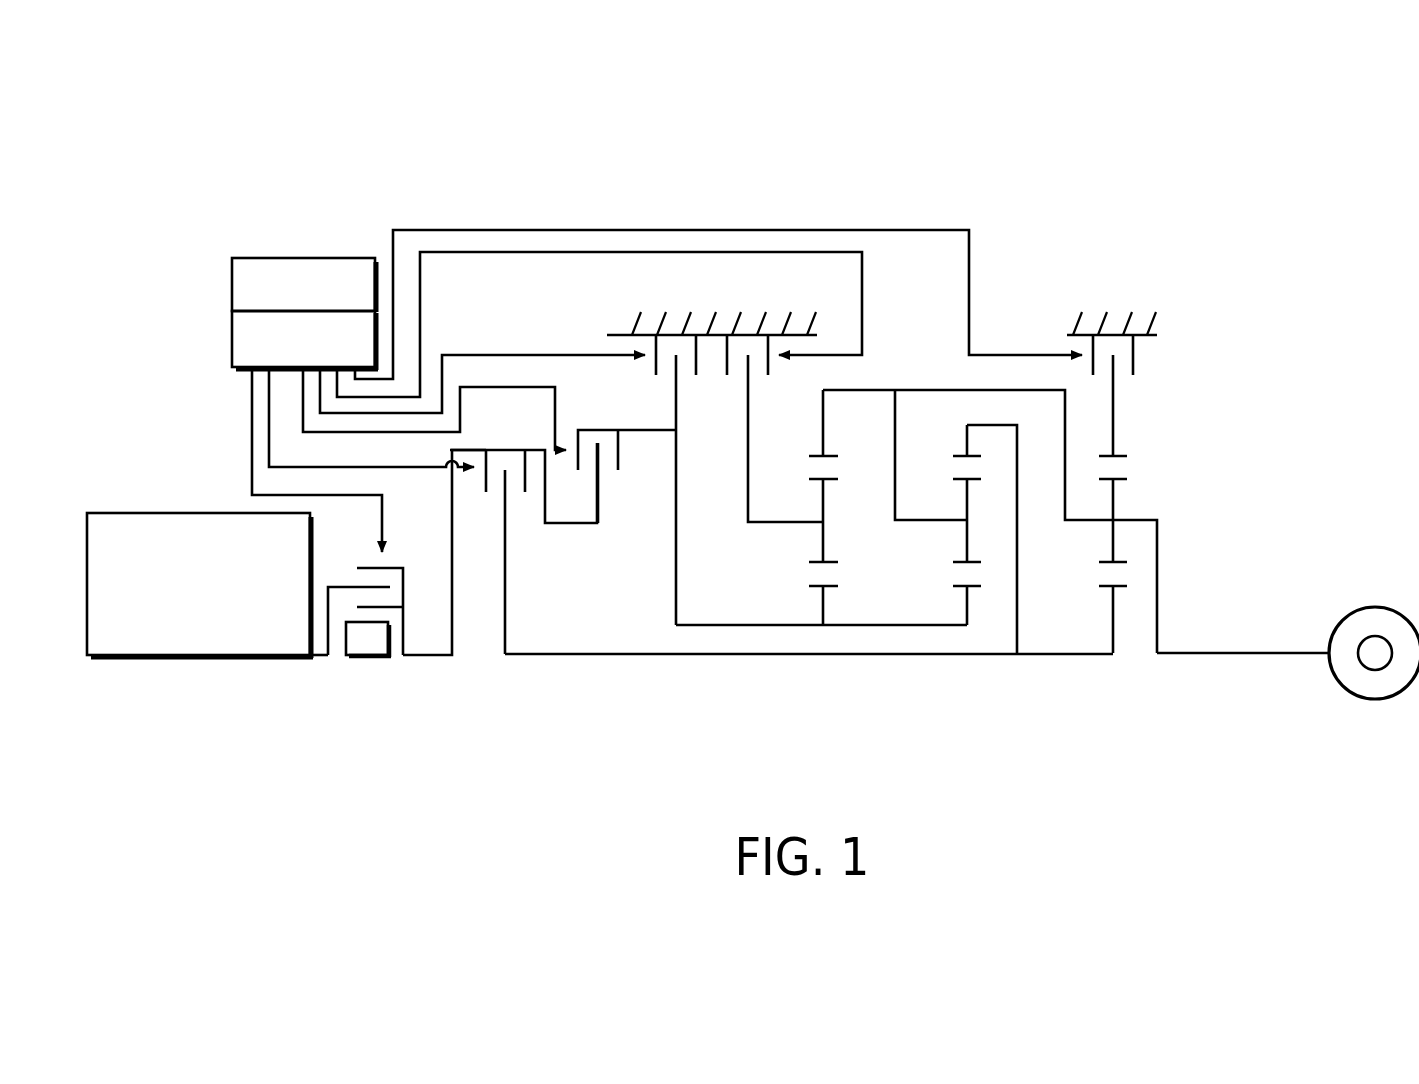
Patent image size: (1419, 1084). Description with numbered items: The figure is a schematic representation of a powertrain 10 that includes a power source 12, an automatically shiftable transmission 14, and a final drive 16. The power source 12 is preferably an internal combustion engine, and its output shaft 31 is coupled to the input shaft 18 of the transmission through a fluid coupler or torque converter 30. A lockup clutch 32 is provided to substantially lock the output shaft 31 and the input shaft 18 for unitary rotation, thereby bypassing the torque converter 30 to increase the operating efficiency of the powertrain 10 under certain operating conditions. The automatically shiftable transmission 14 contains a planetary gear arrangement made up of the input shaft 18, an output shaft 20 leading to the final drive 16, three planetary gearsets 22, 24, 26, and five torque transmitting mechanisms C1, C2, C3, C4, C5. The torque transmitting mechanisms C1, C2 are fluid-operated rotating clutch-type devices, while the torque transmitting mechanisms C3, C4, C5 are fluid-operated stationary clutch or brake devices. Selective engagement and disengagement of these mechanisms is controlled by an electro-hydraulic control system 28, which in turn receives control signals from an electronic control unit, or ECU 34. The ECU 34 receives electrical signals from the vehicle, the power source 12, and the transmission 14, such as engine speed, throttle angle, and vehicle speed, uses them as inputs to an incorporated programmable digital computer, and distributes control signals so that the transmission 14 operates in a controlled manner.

The powertrain 10 is at (478, 187).
The power source 12 is at (200, 585).
The automatically shiftable transmission 14 is at (731, 733).
The final drive 16 is at (1378, 606).
The input shaft 18 is at (403, 657).
The output shaft 20 is at (1246, 654).
The planetary gearset 22 is at (822, 645).
The planetary gearset 24 is at (966, 645).
The planetary gearset 26 is at (1090, 640).
The electro-hydraulic control system 28 is at (305, 340).
The torque converter 30 is at (366, 642).
The output shaft 31 is at (320, 657).
The lockup clutch 32 is at (376, 560).
The electronic control unit 34 is at (304, 285).
The torque transmitting mechanism C1 is at (523, 536).
The torque transmitting mechanism C2 is at (627, 460).
The torque transmitting mechanism C3 is at (712, 454).
The torque transmitting mechanism C4 is at (775, 402).
The torque transmitting mechanism C5 is at (1112, 369).